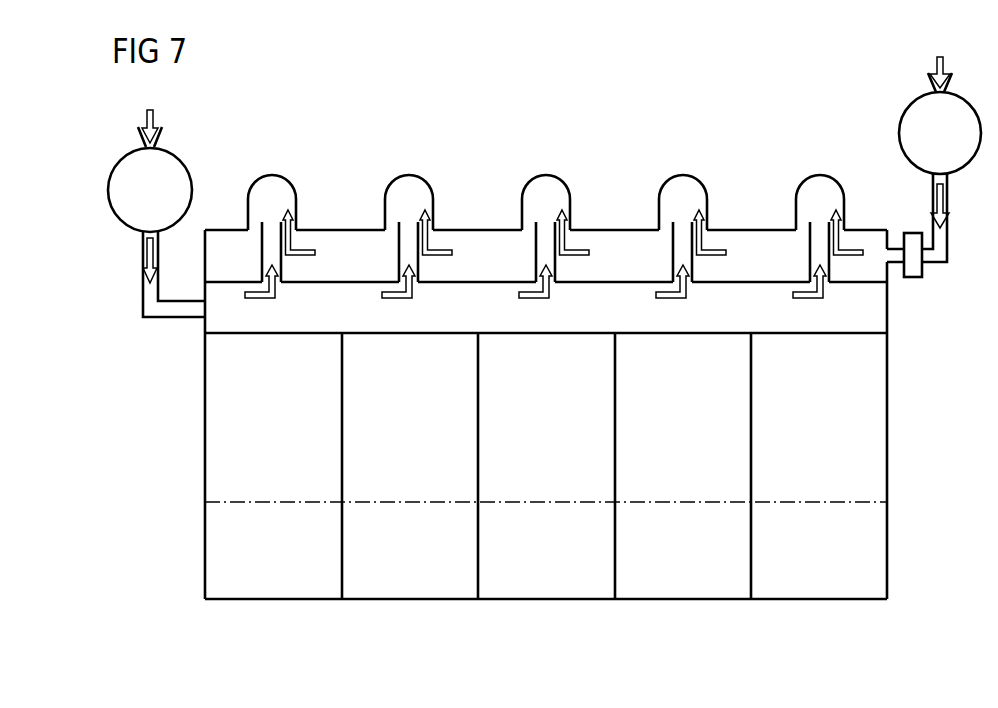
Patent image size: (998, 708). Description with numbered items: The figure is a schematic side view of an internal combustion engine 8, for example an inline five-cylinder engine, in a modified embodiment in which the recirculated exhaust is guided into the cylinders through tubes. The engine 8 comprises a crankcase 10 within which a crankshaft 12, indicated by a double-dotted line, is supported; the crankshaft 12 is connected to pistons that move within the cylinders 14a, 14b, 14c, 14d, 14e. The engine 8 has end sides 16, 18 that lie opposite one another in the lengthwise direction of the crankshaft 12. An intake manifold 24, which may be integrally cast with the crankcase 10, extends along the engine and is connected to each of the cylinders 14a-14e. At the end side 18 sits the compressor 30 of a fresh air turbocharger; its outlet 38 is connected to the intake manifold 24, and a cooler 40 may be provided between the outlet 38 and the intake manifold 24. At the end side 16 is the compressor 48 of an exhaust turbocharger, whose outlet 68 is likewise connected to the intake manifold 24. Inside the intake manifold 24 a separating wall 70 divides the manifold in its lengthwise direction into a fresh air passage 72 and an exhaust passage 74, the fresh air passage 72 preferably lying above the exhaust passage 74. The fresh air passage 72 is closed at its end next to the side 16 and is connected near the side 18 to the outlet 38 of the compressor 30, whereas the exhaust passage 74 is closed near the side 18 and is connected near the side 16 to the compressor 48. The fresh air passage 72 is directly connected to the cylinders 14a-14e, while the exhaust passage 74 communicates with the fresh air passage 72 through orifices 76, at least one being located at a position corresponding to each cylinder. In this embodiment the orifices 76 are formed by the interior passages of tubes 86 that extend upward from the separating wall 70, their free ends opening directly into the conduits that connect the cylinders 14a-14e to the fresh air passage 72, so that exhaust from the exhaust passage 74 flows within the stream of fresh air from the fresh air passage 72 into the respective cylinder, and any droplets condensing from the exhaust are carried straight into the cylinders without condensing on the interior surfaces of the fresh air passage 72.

The internal combustion engine 8 is at (718, 108).
The crankcase 10 is at (212, 565).
The crankshaft 12 is at (240, 502).
The cylinder 14a is at (273, 182).
The cylinder 14b is at (410, 182).
The cylinder 14c is at (547, 182).
The cylinder 14d is at (684, 182).
The cylinder 14e is at (821, 182).
The end side 16 is at (203, 417).
The end side 18 is at (887, 425).
The intake manifold 24 is at (473, 230).
The compressor 30 is at (912, 128).
The outlet 38 is at (948, 175).
The cooler 40 is at (913, 268).
The compressor 48 is at (178, 180).
The outlet 68 is at (143, 236).
The separating wall 70 is at (605, 282).
The fresh air passage 72 is at (337, 240).
The exhaust passage 74 is at (550, 320).
The orifices 76 is at (416, 284).
The tubes 86 is at (284, 272).